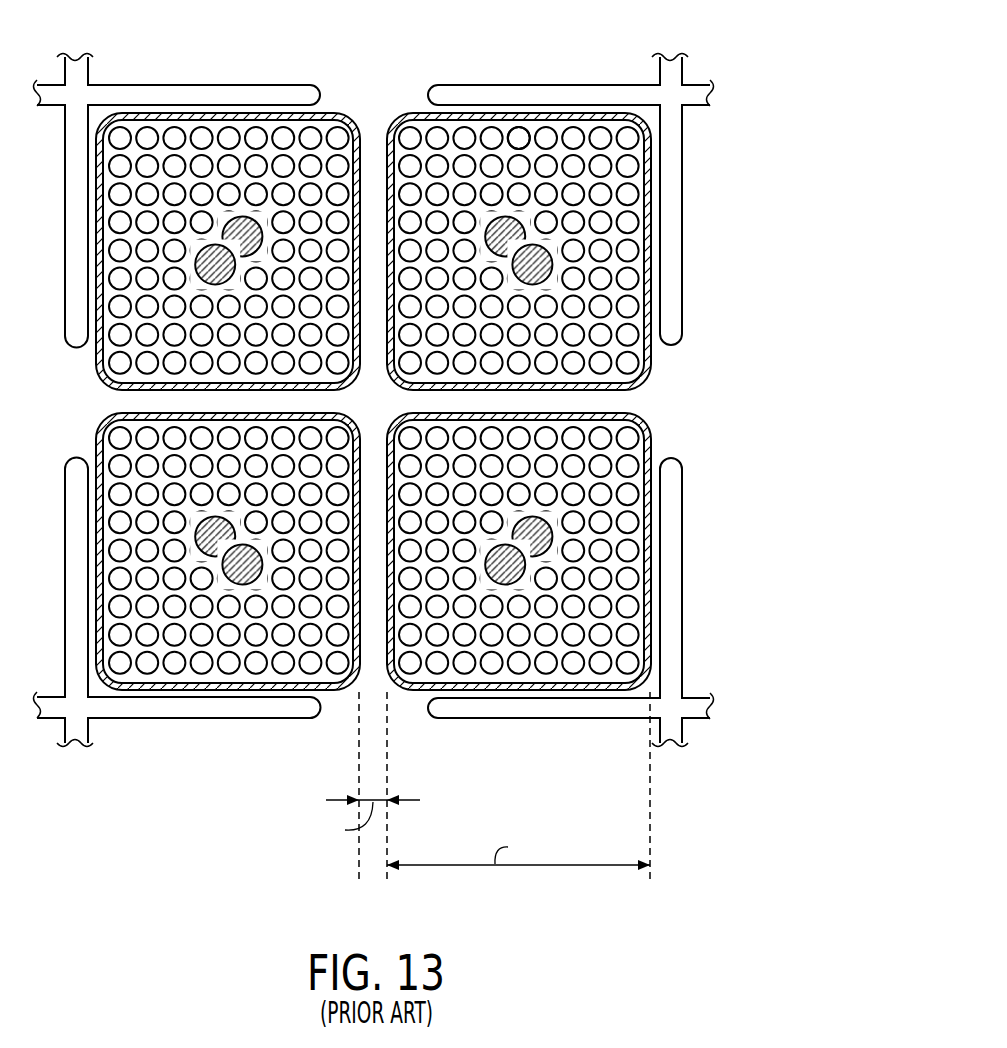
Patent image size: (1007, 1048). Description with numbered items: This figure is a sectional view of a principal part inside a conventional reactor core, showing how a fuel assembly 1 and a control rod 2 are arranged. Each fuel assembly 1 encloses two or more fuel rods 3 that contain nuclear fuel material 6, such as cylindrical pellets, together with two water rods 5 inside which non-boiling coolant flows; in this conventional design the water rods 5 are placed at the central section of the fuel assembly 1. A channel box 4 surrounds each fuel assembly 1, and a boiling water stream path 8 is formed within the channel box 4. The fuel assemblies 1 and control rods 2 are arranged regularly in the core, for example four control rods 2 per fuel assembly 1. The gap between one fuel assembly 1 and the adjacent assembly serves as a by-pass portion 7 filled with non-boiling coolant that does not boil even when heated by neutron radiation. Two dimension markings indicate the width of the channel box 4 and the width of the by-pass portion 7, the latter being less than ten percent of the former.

The fuel assembly 1 is at (432, 397).
The control rod 2 is at (120, 84).
The fuel rod 3 is at (342, 139).
The channel box 4 is at (97, 366).
The water rod 5 is at (212, 243).
The nuclear fuel material 6 is at (518, 138).
The by-pass portion 7 is at (607, 402).
The boiling water stream path 8 is at (112, 210).